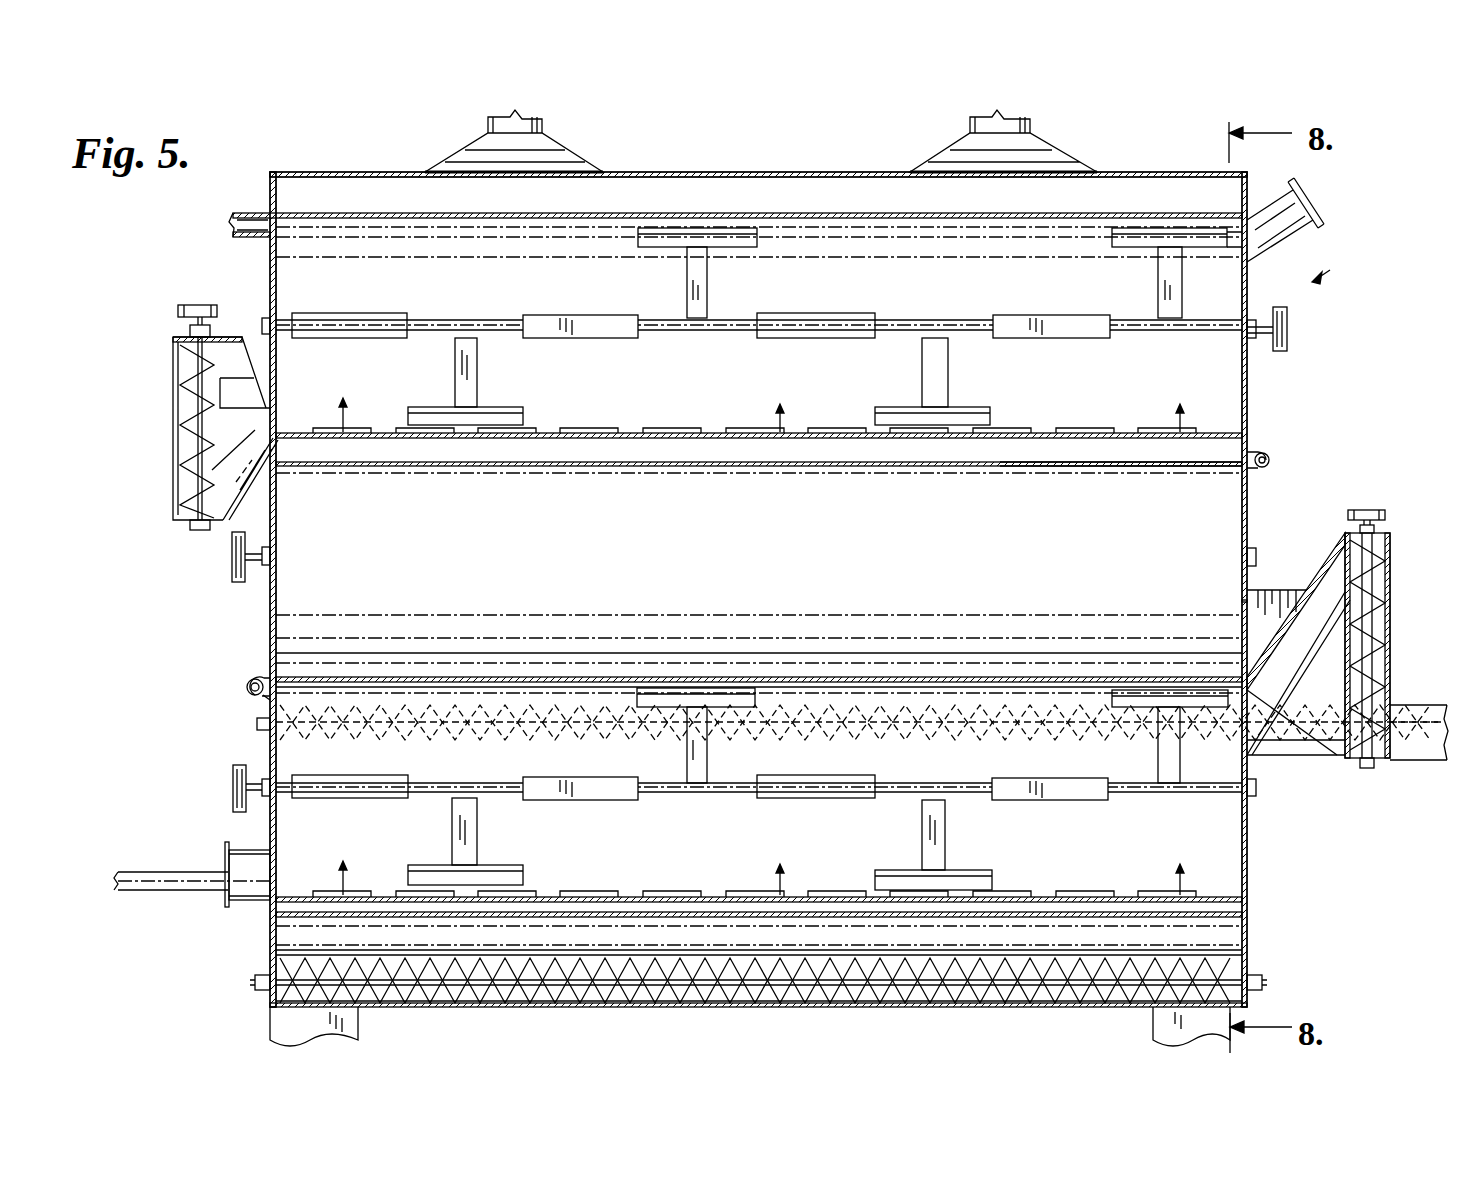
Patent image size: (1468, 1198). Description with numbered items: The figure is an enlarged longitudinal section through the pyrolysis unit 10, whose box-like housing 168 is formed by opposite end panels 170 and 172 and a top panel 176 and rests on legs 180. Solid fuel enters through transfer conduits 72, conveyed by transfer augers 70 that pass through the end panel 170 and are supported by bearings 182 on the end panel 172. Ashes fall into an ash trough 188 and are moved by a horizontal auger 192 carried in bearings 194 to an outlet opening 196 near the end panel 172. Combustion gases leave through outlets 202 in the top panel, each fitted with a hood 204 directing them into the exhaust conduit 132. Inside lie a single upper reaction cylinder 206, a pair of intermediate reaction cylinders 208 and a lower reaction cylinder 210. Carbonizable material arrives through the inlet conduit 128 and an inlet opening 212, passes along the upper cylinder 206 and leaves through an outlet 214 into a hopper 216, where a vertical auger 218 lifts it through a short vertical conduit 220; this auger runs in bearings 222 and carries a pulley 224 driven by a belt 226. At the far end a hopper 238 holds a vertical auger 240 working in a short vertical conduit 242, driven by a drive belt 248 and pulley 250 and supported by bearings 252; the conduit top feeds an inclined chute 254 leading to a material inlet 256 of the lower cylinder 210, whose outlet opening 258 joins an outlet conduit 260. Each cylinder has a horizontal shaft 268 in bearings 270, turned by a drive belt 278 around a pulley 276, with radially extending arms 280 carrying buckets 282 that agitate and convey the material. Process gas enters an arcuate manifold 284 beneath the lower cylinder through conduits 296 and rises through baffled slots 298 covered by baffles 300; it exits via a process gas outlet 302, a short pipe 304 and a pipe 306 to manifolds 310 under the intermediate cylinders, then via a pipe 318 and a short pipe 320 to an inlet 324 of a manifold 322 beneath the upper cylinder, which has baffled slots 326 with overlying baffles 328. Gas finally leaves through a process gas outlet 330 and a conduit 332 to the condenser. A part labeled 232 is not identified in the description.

The pyrolysis unit 10 is at (1337, 271).
The transfer augers 70 is at (960, 740).
The transfer conduits 72 is at (1434, 708).
The inlet conduit 128 is at (1262, 256).
The exhaust conduit 132 is at (542, 120).
The housing 168 is at (758, 174).
The end panel 170 is at (1247, 392).
The end panel 172 is at (270, 257).
The top panel 176 is at (680, 173).
The legs 180 is at (356, 1010).
The bearings 182 is at (259, 730).
The ash trough 188 is at (738, 1008).
The horizontal auger 192 is at (782, 1004).
The bearings 194 is at (256, 975).
The outlet opening 196 is at (278, 1005).
The outlets 202 is at (539, 175).
The hood 204 is at (578, 163).
The upper reaction cylinder 206 is at (860, 226).
The intermediate reaction cylinders 208 is at (292, 602).
The lower reaction cylinder 210 is at (1228, 850).
The inlet opening 212 is at (1240, 252).
The outlet 214 is at (280, 425).
The hopper 216 is at (235, 497).
The vertical auger 218 is at (186, 438).
The short vertical conduit 220 is at (176, 370).
The bearings 222 is at (186, 330).
The pulley 224 is at (202, 307).
The belt 226 is at (178, 306).
The conveyor floor plate 232 is at (276, 460).
The hopper 238 is at (1272, 590).
The vertical auger 240 is at (1384, 610).
The short vertical conduit 242 is at (1390, 556).
The drive belt 248 is at (1374, 510).
The pulley 250 is at (1366, 508).
The bearings 252 is at (1376, 522).
The inclined chute 254 is at (1274, 632).
The material inlet 256 is at (1270, 690).
The outlet opening 258 is at (280, 870).
The outlet conduit 260 is at (242, 848).
The horizontal shaft 268 is at (920, 320).
The bearings 270 is at (264, 316).
The pulley 276 is at (232, 562).
The drive belt 278 is at (232, 552).
The radially extending arms 280 is at (687, 290).
The bucket 282 is at (368, 313).
The arcuate manifold 284 is at (604, 916).
The conduits 296 is at (214, 883).
The baffled slots 298 is at (404, 890).
The baffle 300 is at (334, 890).
The process gas outlet 302 is at (264, 697).
The short pipe 304 is at (264, 678).
The pipe 306 is at (247, 683).
The manifolds 310 is at (802, 675).
The pipe 318 is at (1270, 456).
The short pipe 320 is at (1254, 452).
The manifold 322 is at (1136, 466).
The inlet 324 is at (1216, 462).
The baffled slots 326 is at (358, 430).
The baffle 328 is at (606, 428).
The process gas outlet 330 is at (289, 214).
The conduit 332 is at (243, 212).